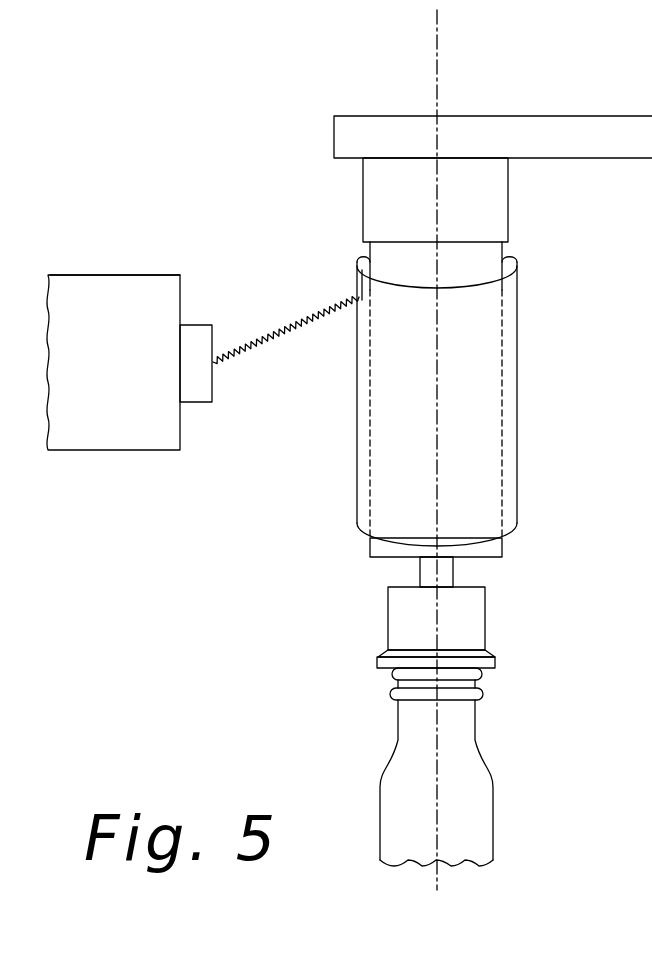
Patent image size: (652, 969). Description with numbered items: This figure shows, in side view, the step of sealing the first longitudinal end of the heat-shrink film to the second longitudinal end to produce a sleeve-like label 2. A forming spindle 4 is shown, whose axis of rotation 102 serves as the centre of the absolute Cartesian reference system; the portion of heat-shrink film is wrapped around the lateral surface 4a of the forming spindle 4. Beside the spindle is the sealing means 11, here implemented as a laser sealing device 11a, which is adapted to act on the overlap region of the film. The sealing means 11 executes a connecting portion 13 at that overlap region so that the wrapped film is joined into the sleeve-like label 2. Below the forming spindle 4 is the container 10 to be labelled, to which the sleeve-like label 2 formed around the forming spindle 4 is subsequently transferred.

The axis of rotation 102 is at (438, 52).
The forming spindle 4 is at (460, 263).
The lateral surface 4a is at (408, 263).
The sleeve-like label 2 is at (470, 354).
The connecting portion 13 is at (358, 289).
The sealing means 11 is at (113, 408).
The laser sealing device 11a is at (108, 320).
The container 10 is at (460, 817).